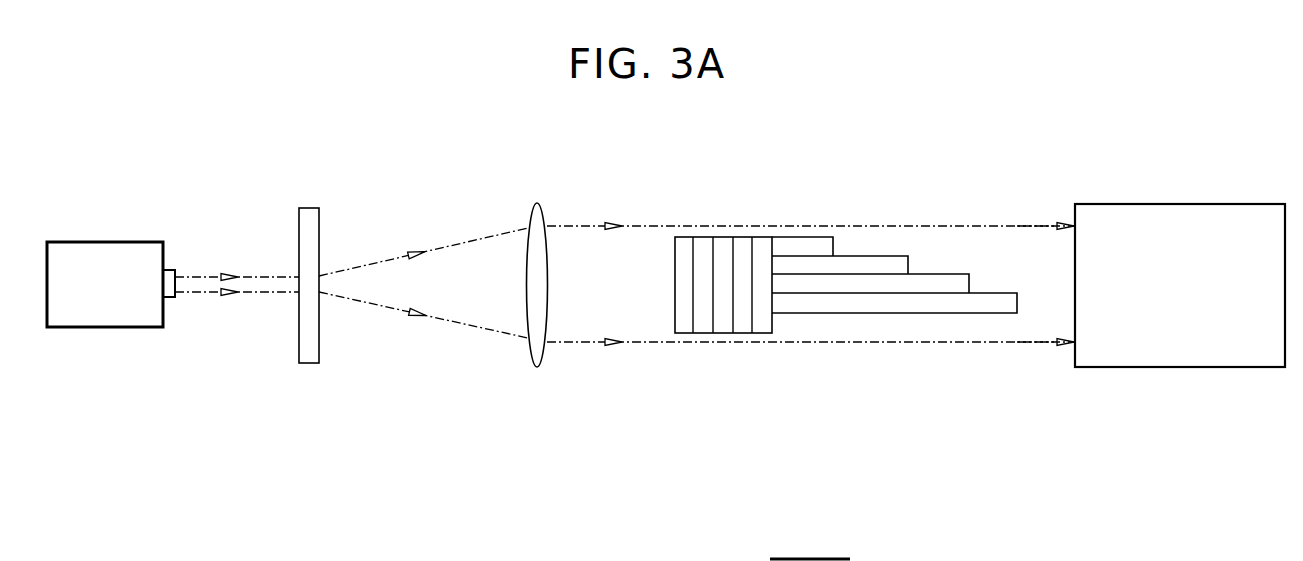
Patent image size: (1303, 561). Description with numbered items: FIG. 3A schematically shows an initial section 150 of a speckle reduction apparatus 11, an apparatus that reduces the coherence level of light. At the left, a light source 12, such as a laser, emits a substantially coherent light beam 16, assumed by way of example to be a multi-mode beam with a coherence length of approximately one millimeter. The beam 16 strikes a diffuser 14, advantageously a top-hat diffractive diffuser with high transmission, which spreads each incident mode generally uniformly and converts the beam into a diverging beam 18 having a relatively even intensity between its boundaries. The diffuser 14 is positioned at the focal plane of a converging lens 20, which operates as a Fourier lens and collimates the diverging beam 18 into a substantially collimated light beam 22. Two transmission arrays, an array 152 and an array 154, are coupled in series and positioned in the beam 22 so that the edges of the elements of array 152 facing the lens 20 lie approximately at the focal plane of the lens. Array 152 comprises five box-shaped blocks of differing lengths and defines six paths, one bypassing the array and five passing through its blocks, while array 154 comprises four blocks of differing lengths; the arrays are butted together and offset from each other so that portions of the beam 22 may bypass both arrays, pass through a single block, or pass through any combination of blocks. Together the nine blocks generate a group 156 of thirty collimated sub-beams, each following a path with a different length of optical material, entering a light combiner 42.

The speckle reduction apparatus 11 is at (588, 373).
The light source 12 is at (110, 242).
The diffuser 14 is at (308, 208).
The coherent light beam 16 is at (200, 274).
The diverging beam 18 is at (395, 273).
The converging lens 20 is at (541, 207).
The collimated light beam 22 is at (620, 223).
The light combiner 42 is at (1177, 204).
The initial section 150 is at (326, 236).
The array 152 is at (772, 223).
The array 154 is at (1017, 222).
The group of collimated sub-beams 156 is at (1055, 205).